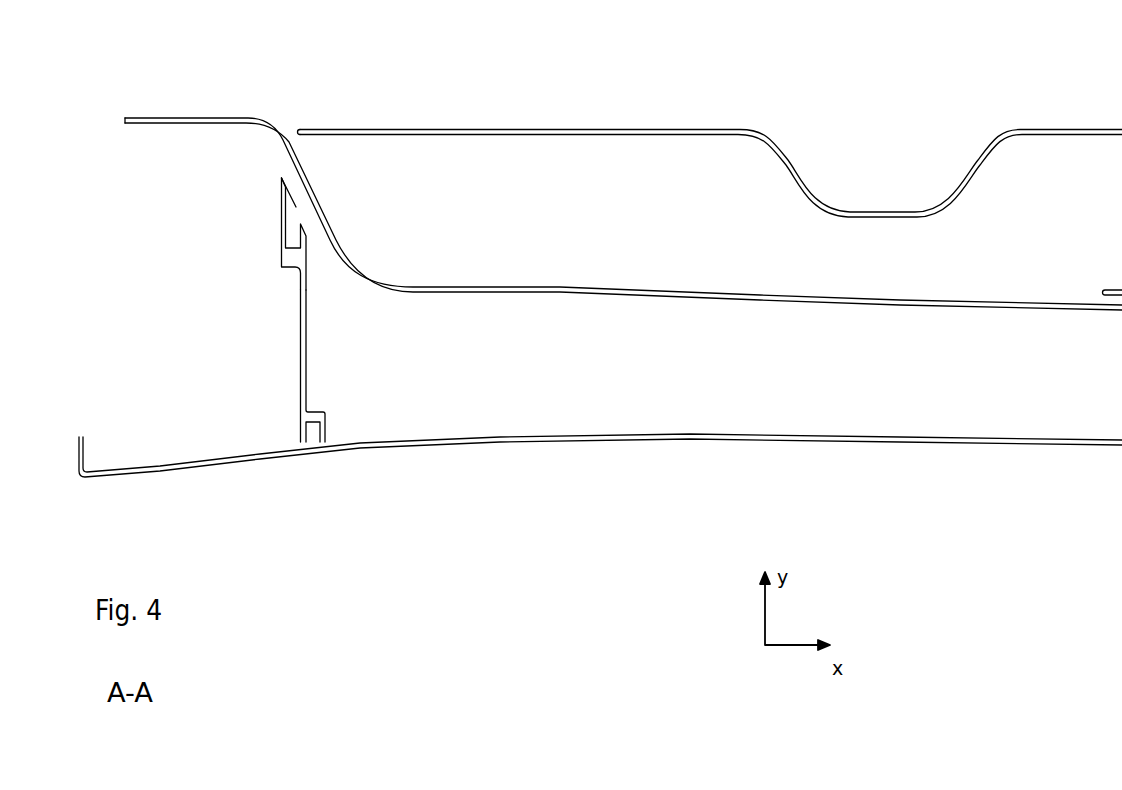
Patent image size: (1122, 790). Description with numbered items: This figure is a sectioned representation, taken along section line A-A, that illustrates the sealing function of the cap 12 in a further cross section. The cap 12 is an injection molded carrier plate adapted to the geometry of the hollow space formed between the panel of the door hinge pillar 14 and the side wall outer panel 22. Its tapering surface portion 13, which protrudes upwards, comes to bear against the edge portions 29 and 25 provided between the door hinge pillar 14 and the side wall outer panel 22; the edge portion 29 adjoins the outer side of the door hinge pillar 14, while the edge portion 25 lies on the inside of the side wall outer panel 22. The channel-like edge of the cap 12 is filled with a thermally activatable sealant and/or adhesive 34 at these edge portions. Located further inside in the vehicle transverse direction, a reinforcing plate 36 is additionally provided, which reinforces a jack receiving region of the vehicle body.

The cap 12 is at (208, 343).
The vertical surface portion 13 is at (306, 387).
The door hinge pillar 14 is at (615, 287).
The side wall outer panel 22 is at (690, 441).
The edge portion 25 is at (300, 441).
The edge portion 29 is at (281, 195).
The sealant and/or adhesive 34 is at (295, 222).
The reinforcing plate 36 is at (702, 129).